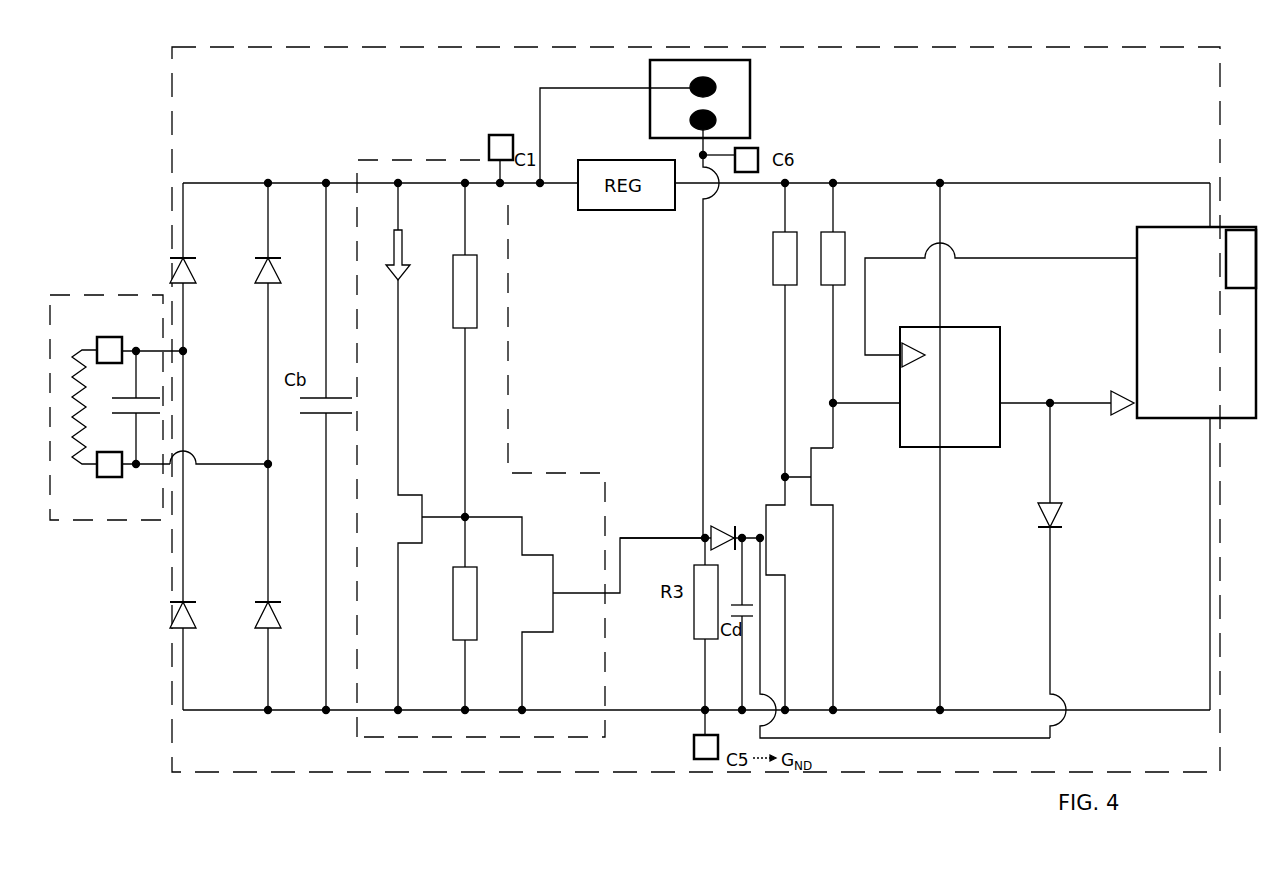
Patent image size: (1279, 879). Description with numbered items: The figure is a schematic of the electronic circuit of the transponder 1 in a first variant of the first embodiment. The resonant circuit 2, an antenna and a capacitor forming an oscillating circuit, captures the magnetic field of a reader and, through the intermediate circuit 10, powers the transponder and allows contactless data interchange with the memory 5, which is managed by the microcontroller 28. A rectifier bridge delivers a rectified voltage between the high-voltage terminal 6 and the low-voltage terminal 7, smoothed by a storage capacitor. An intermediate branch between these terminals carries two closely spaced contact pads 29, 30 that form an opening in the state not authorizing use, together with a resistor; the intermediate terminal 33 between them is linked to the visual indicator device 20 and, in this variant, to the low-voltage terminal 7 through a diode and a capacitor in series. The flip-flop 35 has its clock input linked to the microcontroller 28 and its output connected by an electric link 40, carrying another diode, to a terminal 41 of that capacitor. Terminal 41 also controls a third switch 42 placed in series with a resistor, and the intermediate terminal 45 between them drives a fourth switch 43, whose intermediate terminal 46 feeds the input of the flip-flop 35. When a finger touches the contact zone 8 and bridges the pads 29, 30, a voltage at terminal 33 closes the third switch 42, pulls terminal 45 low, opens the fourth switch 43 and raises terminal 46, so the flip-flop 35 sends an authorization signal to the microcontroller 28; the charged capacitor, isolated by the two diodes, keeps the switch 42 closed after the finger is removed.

The transponder 1 is at (145, 79).
The resonant circuit 2 is at (70, 522).
The memory 5 is at (1245, 240).
The high-voltage terminal 6 is at (337, 181).
The low-voltage terminal 7 is at (330, 713).
The contact zone 8 is at (702, 71).
The intermediate circuit 10 is at (197, 157).
The visual indicator device 20 is at (433, 166).
The microcontroller 28 is at (1196, 330).
The contact pad 29 is at (716, 84).
The contact pad 30 is at (716, 118).
The intermediate terminal 33 is at (705, 536).
The flip-flop 35 is at (978, 440).
The electric link 40 is at (1053, 638).
The terminal of the capacitor 41 is at (760, 534).
The third switch 42 is at (773, 532).
The fourth switch 43 is at (820, 464).
The intermediate terminal 45 is at (785, 474).
The intermediate terminal 46 is at (833, 400).